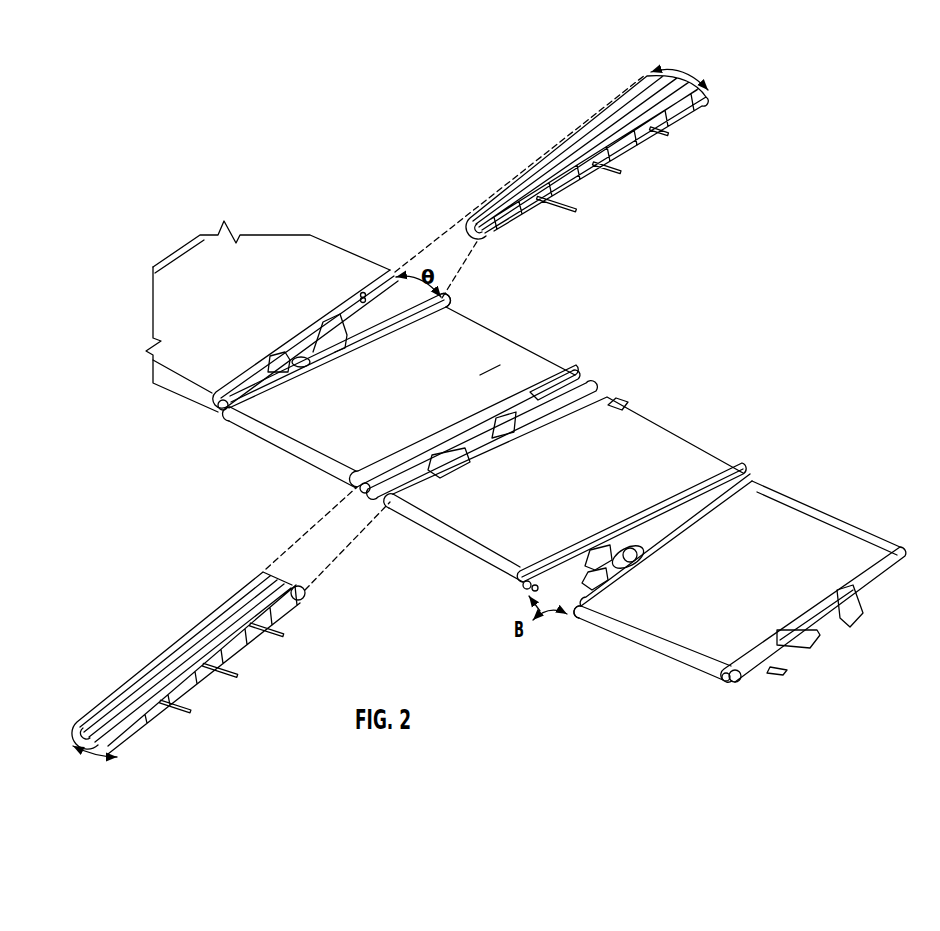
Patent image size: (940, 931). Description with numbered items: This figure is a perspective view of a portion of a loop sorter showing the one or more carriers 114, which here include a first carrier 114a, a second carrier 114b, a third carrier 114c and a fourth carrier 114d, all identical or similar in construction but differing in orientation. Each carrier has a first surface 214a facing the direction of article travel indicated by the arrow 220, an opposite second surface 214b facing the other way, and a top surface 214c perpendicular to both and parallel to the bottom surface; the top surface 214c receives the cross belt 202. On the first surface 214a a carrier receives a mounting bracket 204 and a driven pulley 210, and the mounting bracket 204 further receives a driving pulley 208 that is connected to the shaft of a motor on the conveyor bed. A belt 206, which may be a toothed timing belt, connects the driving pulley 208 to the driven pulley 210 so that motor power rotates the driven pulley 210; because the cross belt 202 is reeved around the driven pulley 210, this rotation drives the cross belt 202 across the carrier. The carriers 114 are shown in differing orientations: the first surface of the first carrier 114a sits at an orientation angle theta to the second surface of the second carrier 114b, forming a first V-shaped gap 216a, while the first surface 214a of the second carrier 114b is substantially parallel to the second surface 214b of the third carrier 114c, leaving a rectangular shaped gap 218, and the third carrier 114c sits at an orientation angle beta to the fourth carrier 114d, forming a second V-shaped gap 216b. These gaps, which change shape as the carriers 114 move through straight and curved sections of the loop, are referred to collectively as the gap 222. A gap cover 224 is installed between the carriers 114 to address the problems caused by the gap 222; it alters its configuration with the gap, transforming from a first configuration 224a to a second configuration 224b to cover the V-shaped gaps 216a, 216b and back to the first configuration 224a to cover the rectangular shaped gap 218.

The carriers 114 is at (307, 150).
The first carrier 114a is at (262, 306).
The second carrier 114b is at (405, 411).
The third carrier 114c is at (580, 505).
The fourth carrier 114d is at (764, 585).
The cross belt 202 is at (357, 266).
The mounting bracket 204 is at (316, 348).
The belt 206 is at (258, 366).
The driving pulley 208 is at (640, 544).
The driven pulley 210 is at (520, 588).
The first surface 214a is at (573, 393).
The second surface 214b is at (615, 403).
The top surface 214c is at (498, 370).
The first V-shaped gap 216a is at (398, 274).
The second V-shaped gap 216b is at (584, 610).
The rectangular shaped gap 218 is at (580, 396).
The arrow indicating direction of travel 220 is at (238, 267).
The gap 222 is at (398, 324).
The gap cover 224 is at (648, 76).
The first configuration 224a is at (93, 753).
The second configuration 224b is at (698, 77).